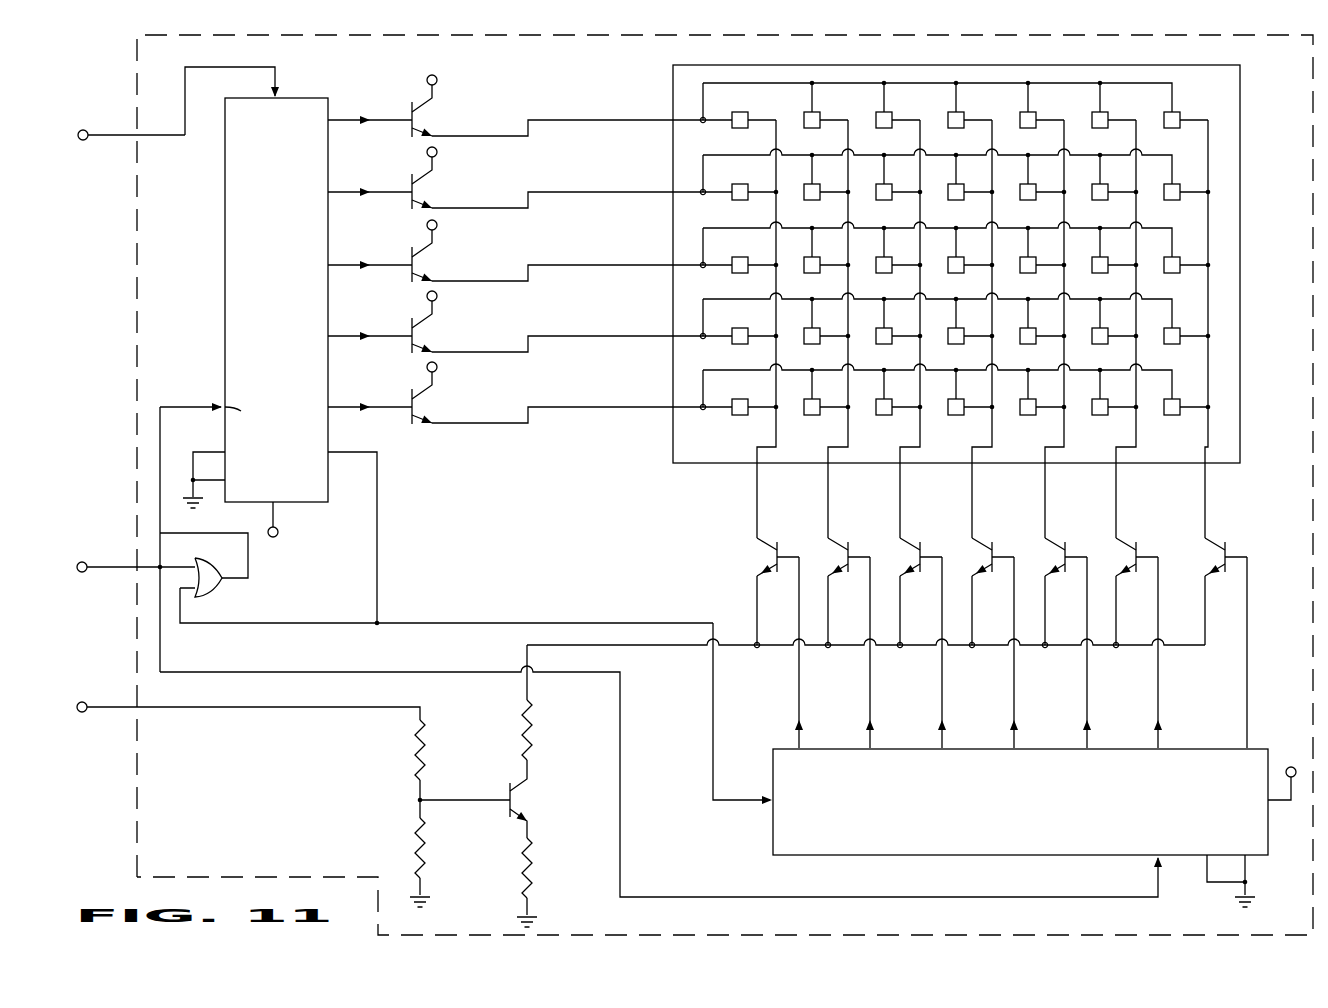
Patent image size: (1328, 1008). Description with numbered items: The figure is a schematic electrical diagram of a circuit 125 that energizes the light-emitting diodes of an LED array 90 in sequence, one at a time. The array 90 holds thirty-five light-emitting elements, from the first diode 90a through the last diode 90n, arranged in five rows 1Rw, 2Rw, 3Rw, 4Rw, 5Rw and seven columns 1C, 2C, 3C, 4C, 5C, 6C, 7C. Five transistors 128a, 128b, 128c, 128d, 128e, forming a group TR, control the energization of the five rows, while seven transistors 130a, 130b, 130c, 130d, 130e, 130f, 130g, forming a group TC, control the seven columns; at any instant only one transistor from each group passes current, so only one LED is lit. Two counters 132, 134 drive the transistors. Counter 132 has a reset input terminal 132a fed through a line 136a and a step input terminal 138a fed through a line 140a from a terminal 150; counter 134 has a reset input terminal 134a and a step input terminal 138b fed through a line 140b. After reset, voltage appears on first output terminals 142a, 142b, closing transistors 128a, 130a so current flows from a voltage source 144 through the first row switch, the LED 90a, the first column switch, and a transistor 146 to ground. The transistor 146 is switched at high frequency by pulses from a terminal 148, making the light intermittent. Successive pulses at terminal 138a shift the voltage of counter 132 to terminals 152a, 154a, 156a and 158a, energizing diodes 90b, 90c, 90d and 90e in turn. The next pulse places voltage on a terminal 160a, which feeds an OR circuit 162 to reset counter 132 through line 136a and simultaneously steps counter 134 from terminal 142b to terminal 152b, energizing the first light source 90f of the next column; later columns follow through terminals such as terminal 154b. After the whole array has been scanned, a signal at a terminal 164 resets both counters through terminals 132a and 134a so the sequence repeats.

The circuit 125 is at (126, 233).
The counter 132 is at (235, 250).
The reset input terminal 132a is at (256, 418).
The counter 134 is at (778, 847).
The reset input terminal 134a is at (1158, 855).
The line 136a is at (175, 406).
The step input terminal 138a is at (279, 88).
The step input terminal 138b is at (768, 802).
The line 140a is at (186, 136).
The line 140b is at (551, 623).
The first output terminal 142a is at (326, 112).
The first output terminal 142b is at (798, 749).
The voltage source 144 is at (436, 77).
The transistor 146 is at (513, 794).
The terminal 148 is at (85, 702).
The terminal 150 is at (84, 130).
The terminal 152a is at (326, 184).
The terminal 152b is at (869, 749).
The terminal 154a is at (326, 257).
The terminal 154b is at (941, 749).
The terminal 156a is at (326, 328).
The terminal 158a is at (326, 405).
The terminal 160a is at (326, 452).
The OR circuit 162 is at (218, 583).
The terminal 164 is at (85, 562).
The LED array 90 is at (926, 278).
The light-emitting diode 90a is at (734, 130).
The light-emitting diode 90b is at (734, 202).
The light source 90c is at (734, 275).
The light source 90d is at (734, 345).
The light source 90e is at (734, 417).
The light source 90f is at (803, 114).
The light-emitting diode 90n is at (1170, 418).
The transistor 128a is at (410, 123).
The transistor 128b is at (410, 195).
The transistor 128c is at (410, 268).
The transistor 128d is at (410, 339).
The transistor 128e is at (410, 410).
The transistor 130a is at (799, 530).
The transistor 130b is at (870, 530).
The transistor 130c is at (942, 530).
The transistor 130d is at (1014, 530).
The transistor 130e is at (1087, 530).
The transistor 130f is at (1158, 530).
The transistor 130g is at (1247, 530).
The group TR is at (408, 442).
The group TC is at (745, 553).
The column 1C is at (739, 100).
The column 2C is at (811, 100).
The column 3C is at (883, 100).
The column 4C is at (955, 100).
The column 5C is at (1027, 100).
The column 6C is at (1099, 100).
The column 7C is at (1171, 100).
The row 1Rw is at (658, 128).
The row 2Rw is at (658, 200).
The row 3Rw is at (658, 273).
The row 4Rw is at (658, 344).
The row 5Rw is at (658, 415).